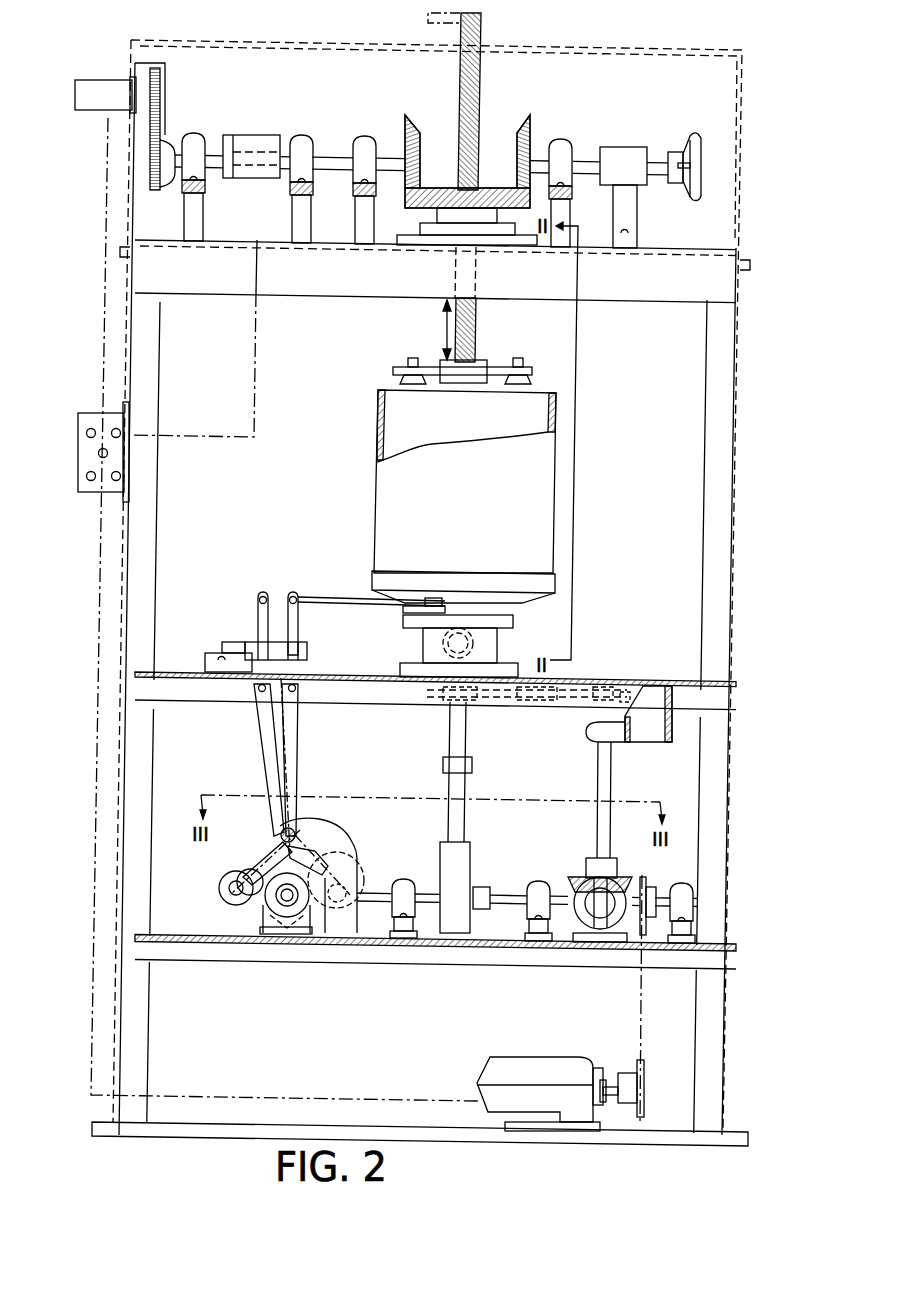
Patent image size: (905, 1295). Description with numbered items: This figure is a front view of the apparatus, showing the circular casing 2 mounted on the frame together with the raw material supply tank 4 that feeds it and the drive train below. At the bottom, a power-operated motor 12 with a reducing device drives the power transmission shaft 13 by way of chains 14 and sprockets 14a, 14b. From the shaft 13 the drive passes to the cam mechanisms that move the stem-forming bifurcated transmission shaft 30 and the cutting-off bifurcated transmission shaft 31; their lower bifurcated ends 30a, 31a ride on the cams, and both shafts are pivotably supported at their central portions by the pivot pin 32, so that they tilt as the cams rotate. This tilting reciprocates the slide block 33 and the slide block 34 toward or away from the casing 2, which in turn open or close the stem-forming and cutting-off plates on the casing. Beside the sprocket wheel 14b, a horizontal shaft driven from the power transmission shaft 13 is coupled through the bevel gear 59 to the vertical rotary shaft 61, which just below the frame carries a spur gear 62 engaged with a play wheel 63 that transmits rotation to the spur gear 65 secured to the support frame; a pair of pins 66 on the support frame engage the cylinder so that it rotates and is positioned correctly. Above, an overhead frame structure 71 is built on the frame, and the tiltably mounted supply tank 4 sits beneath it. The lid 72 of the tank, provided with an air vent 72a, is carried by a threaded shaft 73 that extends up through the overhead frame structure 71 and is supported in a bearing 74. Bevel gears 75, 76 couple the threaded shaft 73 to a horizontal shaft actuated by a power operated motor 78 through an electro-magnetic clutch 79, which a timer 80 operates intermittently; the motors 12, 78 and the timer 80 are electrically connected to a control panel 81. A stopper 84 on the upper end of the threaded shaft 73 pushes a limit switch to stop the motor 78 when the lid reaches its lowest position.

The circular casing 2 is at (507, 649).
The raw material supply tank 4 is at (381, 508).
The power-operated motor 12 is at (507, 1070).
The power transmission shaft 13 is at (510, 900).
The chains 14 is at (640, 1036).
The sprocket 14a is at (628, 1088).
The sprocket wheel 14b is at (653, 887).
The stem-forming bifurcated transmission shaft 30 is at (265, 732).
The lower bifurcated end 30a is at (252, 866).
The cutting-off bifurcated transmission shaft 31 is at (297, 725).
The lower bifurcated end 31a is at (265, 860).
The pivot pin 32 is at (303, 833).
The slide block 33 is at (235, 645).
The slide block 34 is at (304, 652).
The bevel gear 59 is at (573, 913).
The vertical rotary shaft 61 is at (628, 800).
The spur gear 62 is at (625, 690).
The play wheel 63 is at (557, 700).
The spur gear 65 is at (487, 700).
The pins 66 is at (587, 864).
The overhead frame structure 71 is at (737, 376).
The lid 72 is at (498, 372).
The air vent 72a is at (402, 380).
The threaded shaft 73 is at (481, 19).
The bearing 74 is at (505, 233).
The bevel gear 75 is at (495, 187).
The bevel gear 76 is at (406, 128).
The power operated motor 78 is at (96, 100).
The electro-magnetic clutch 79 is at (257, 140).
The timer 80 is at (275, 236).
The control panel 81 is at (86, 422).
The stopper 84 is at (428, 18).